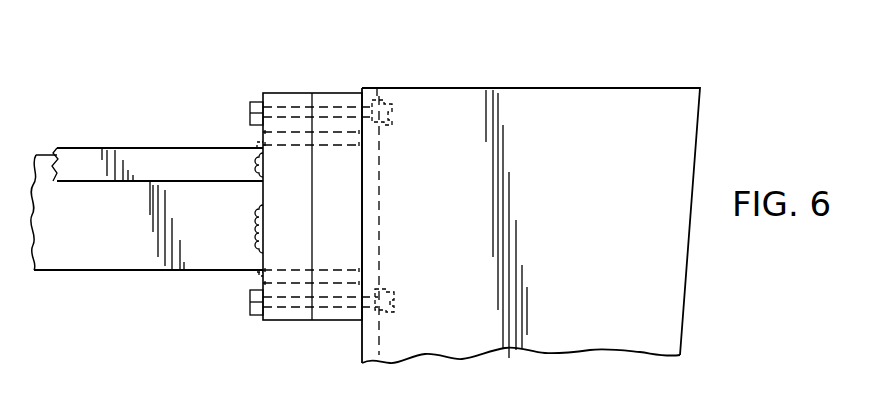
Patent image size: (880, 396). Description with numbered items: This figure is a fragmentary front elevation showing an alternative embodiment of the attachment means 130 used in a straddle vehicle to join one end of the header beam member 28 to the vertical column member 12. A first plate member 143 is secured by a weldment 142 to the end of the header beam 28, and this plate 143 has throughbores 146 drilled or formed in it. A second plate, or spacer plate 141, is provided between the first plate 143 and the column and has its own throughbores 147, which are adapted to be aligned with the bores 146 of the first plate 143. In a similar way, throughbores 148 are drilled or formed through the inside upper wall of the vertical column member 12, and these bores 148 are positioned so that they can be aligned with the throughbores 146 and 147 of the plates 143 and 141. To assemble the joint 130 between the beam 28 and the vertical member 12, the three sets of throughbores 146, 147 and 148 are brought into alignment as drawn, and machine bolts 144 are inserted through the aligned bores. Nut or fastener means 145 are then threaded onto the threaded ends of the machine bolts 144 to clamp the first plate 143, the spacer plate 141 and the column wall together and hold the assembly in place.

The vertical column member 12 is at (576, 226).
The header beam member 28 is at (81, 234).
The attachment means 130 is at (329, 47).
The spacer plate 141 is at (350, 212).
The weldment 142 is at (258, 229).
The first plate member 143 is at (288, 321).
The machine bolts 144 is at (256, 105).
The nut or fastener means 145 is at (400, 290).
The throughbores 146 is at (291, 104).
The throughbores 147 is at (346, 105).
The throughbores 148 is at (394, 118).